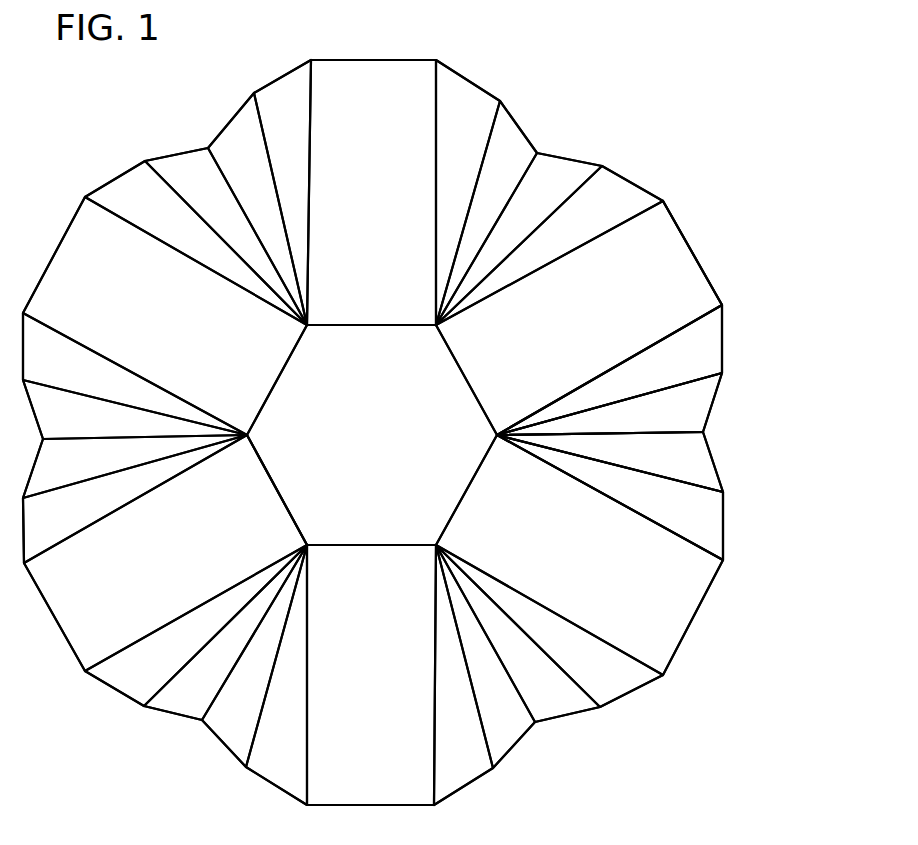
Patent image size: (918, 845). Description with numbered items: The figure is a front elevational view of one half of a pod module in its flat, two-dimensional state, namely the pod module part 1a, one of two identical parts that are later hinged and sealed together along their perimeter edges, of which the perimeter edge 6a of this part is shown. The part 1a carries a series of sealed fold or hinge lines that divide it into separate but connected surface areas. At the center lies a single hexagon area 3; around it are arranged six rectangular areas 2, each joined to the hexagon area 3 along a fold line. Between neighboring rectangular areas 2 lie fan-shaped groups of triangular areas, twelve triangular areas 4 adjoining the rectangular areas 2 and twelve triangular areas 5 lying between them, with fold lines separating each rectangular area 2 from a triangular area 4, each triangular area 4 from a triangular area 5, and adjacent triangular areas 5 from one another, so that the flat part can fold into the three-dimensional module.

The pod module part 1a is at (373, 432).
The rectangular area 2 is at (373, 432).
The hexagon area 3 is at (372, 435).
The triangular area 4 is at (373, 432).
The triangular area 5 is at (373, 430).
The perimeter edge 6a is at (682, 235).